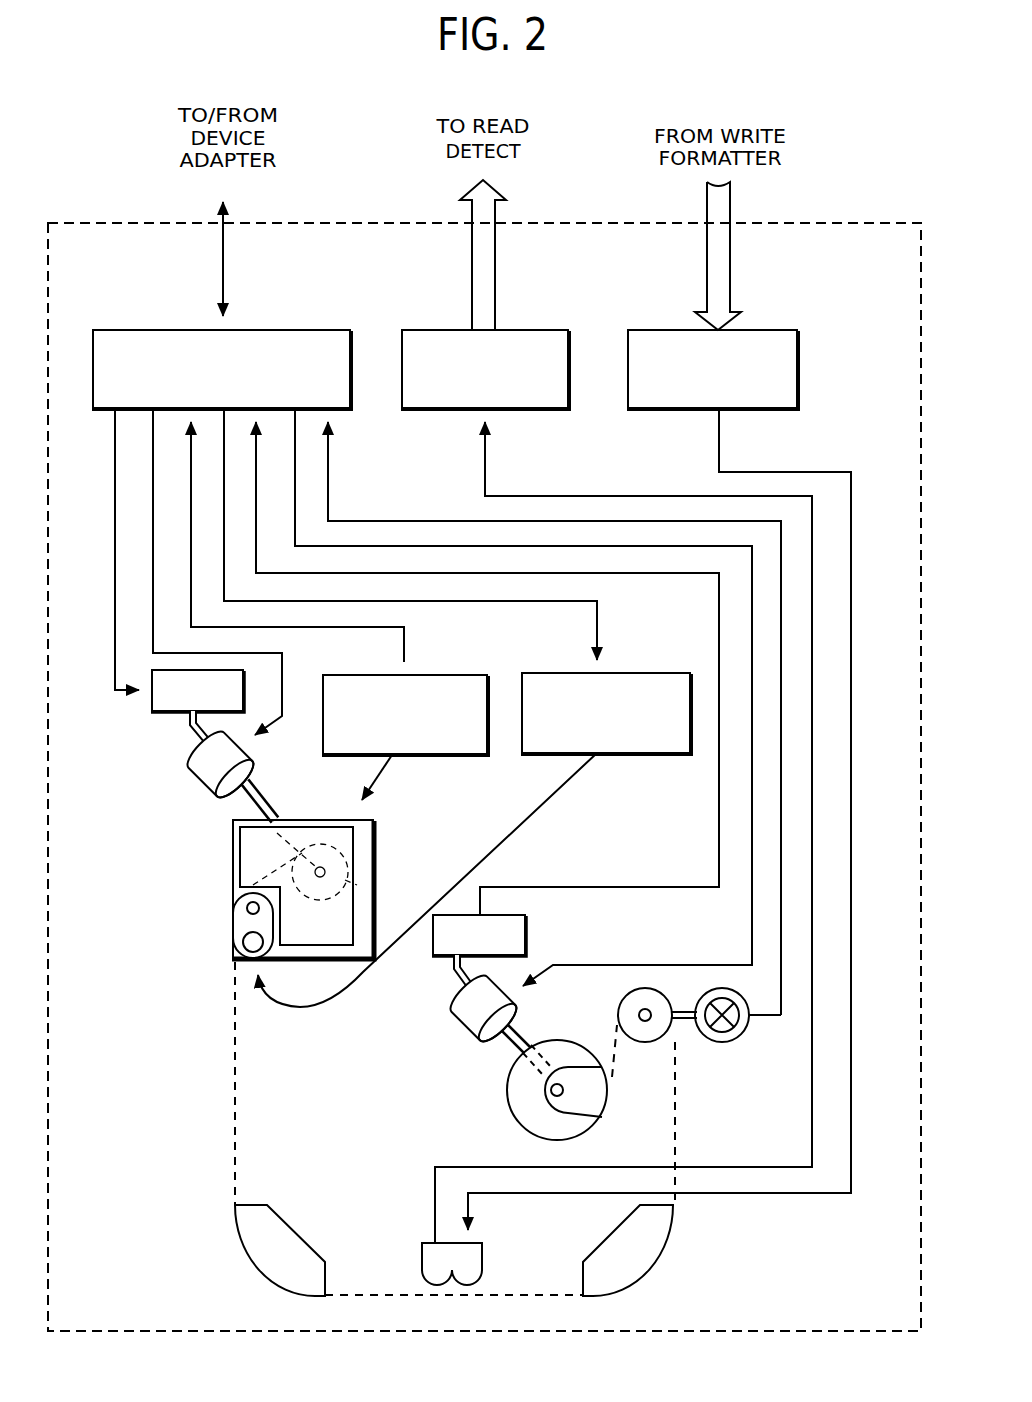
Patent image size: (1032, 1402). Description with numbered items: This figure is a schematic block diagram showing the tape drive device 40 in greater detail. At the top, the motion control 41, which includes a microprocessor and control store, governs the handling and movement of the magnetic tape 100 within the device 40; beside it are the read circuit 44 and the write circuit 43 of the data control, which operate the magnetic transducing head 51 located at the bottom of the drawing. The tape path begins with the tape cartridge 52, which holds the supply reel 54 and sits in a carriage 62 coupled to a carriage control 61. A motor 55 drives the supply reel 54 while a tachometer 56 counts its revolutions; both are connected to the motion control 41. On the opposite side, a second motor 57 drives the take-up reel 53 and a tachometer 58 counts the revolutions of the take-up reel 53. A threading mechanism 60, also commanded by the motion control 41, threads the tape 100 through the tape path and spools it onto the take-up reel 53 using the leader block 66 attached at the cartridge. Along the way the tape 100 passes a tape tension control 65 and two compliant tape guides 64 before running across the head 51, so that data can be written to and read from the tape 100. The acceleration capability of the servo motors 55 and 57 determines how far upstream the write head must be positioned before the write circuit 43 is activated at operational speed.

The device 40 is at (143, 220).
The motion control 41 is at (325, 330).
The write circuit 43 is at (778, 330).
The read circuit 44 is at (532, 330).
The magnetic transducing head 51 is at (480, 1243).
The tape cartridge 52 is at (318, 827).
The take-up reel 53 is at (515, 1097).
The supply reel 54 is at (357, 885).
The motor 55 is at (196, 783).
The tachometer 56 is at (152, 707).
The motor 57 is at (460, 1040).
The tachometer 58 is at (527, 935).
The threading mechanism 60 is at (658, 673).
The carriage control 61 is at (450, 675).
The carriage 62 is at (373, 833).
The compliant tape guides 64 is at (285, 1222).
The tape tension control 65 is at (720, 1043).
The leader block 66 is at (233, 935).
The magnetic tape 100 is at (232, 1108).